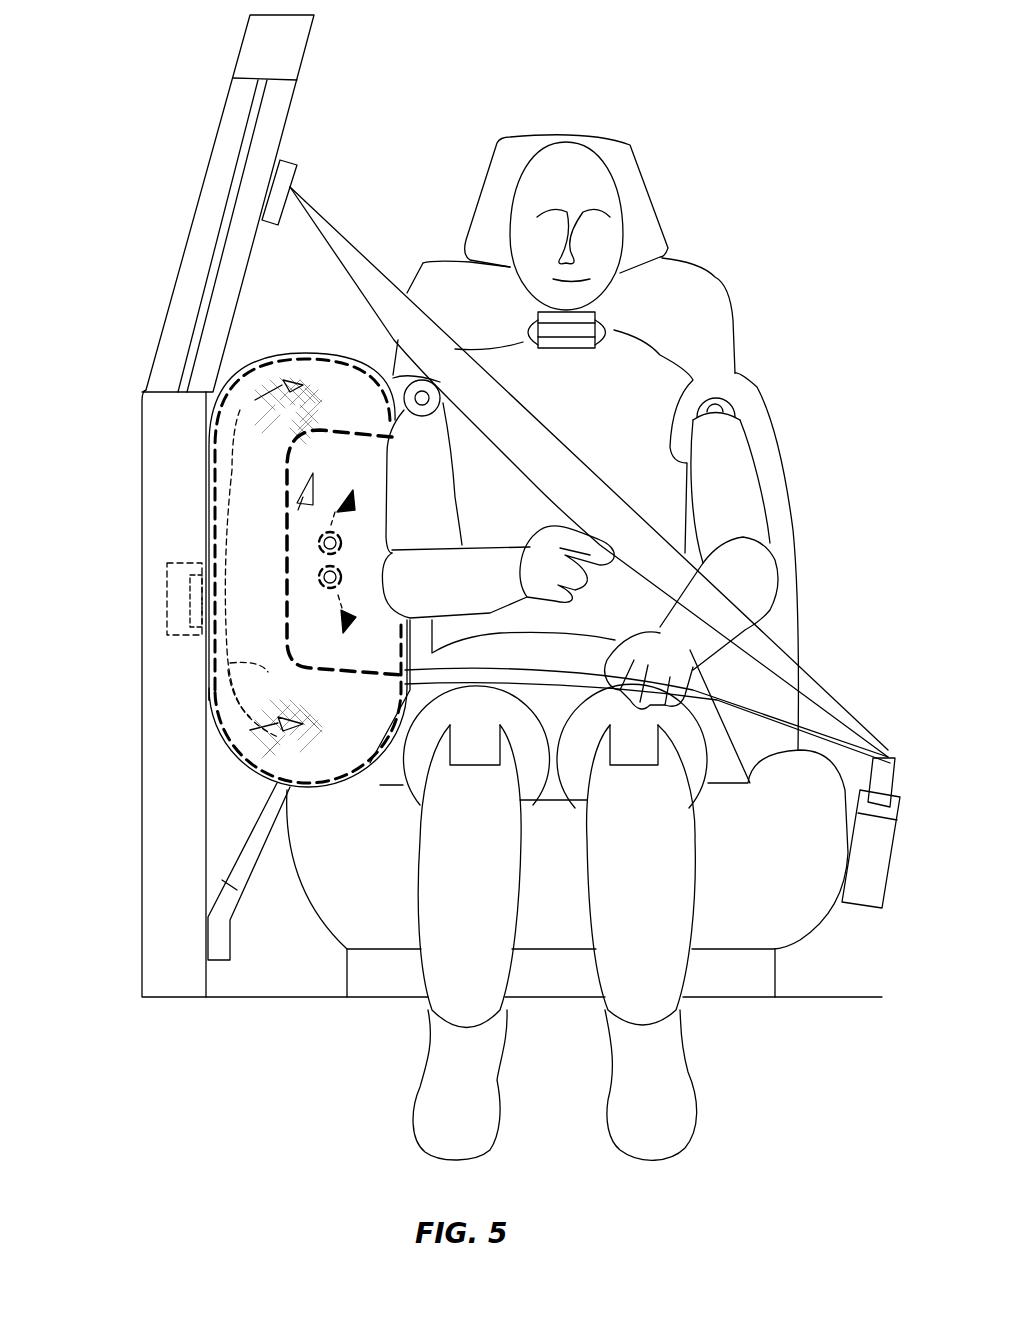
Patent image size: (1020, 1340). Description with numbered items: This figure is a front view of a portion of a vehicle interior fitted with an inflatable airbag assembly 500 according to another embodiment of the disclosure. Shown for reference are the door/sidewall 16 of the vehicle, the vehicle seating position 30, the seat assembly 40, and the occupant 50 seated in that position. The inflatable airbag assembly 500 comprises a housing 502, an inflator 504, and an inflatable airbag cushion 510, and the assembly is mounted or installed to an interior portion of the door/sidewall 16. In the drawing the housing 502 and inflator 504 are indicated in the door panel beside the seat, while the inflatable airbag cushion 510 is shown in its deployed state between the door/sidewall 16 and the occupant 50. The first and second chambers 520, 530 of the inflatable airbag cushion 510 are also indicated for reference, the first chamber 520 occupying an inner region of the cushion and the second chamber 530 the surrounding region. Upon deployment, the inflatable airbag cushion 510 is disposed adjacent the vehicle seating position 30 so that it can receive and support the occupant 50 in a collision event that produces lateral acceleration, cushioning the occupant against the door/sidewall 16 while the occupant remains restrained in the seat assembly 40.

The door/sidewall 16 is at (161, 462).
The vehicle seating position 30 is at (423, 182).
The seat assembly 40 is at (822, 277).
The occupant 50 is at (690, 339).
The inflatable airbag assembly 500 is at (93, 361).
The housing 502 is at (168, 565).
The inflator 504 is at (190, 608).
The inflatable airbag cushion 510 is at (301, 342).
The first chamber 520 is at (337, 463).
The second chamber 530 is at (230, 663).